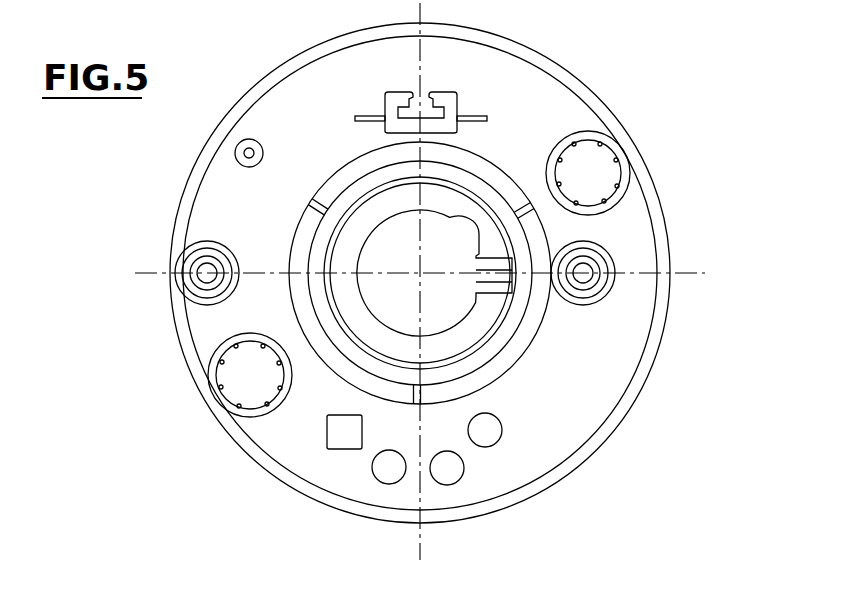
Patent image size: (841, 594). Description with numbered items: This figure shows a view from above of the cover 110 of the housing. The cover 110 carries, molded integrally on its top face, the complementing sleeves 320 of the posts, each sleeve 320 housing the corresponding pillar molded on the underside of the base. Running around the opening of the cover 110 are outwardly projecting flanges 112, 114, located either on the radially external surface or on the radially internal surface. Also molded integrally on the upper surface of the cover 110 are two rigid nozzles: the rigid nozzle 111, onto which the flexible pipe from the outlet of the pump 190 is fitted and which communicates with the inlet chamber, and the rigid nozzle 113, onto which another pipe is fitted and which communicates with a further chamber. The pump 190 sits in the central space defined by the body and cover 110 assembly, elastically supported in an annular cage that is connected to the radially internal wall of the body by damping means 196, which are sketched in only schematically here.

The cover 110 is at (592, 402).
The rigid nozzle 111 is at (198, 300).
The flange 112 is at (650, 357).
The rigid nozzle 113 is at (602, 263).
The flange 114 is at (493, 370).
The pump 190 is at (388, 252).
The damping means 196 is at (522, 205).
The sleeve 320 is at (597, 181).